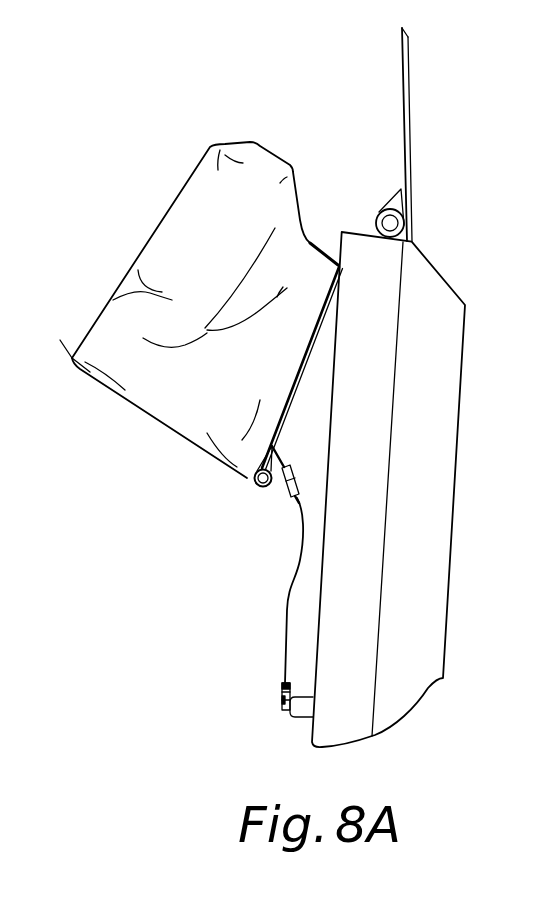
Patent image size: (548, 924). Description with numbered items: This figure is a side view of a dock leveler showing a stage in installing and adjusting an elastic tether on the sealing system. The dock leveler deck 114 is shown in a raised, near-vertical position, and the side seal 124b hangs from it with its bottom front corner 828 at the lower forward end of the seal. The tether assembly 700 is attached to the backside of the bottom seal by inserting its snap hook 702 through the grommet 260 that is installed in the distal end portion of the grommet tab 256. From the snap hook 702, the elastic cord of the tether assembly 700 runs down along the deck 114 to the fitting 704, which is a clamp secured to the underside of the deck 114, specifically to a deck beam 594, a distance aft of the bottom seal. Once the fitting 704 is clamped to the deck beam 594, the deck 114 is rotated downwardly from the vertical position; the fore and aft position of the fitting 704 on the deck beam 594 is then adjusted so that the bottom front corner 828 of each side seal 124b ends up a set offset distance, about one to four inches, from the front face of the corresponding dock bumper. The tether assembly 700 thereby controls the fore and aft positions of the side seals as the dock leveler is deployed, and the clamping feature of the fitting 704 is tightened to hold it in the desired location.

The side seal 124b is at (225, 144).
The bottom front corner 828 is at (72, 358).
The dock leveler deck 114 is at (447, 278).
The grommet tab 256 is at (290, 445).
The grommet 260 is at (292, 468).
The snap hook 702 is at (277, 483).
The tether assembly 700 is at (258, 585).
The fitting 704 is at (287, 712).
The deck beam 594 is at (312, 733).